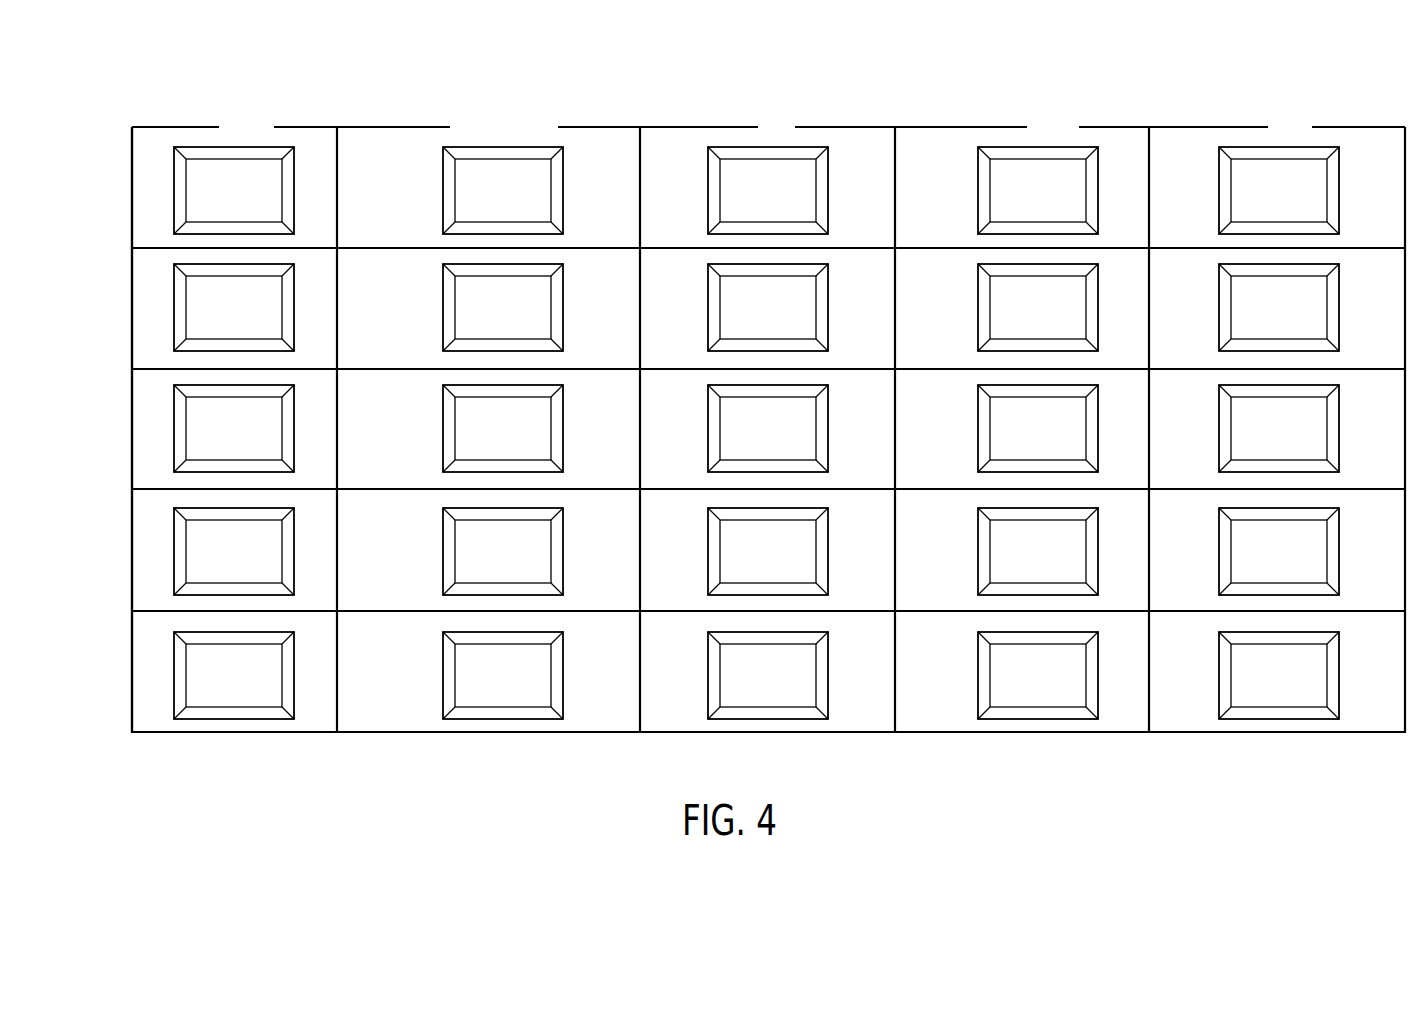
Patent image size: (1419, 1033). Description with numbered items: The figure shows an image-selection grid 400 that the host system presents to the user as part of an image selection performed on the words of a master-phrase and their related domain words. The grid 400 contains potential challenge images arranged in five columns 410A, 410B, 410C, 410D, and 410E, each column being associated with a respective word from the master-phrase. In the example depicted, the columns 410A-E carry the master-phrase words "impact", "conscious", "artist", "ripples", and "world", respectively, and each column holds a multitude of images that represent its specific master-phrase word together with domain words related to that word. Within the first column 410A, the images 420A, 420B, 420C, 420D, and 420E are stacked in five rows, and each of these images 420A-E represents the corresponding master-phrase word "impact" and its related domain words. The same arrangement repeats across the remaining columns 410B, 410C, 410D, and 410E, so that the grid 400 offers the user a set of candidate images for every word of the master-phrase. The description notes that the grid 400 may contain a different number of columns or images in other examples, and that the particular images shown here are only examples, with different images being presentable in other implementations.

The image-selection grid 400 is at (229, 98).
The column 410A is at (255, 120).
The column 410B is at (505, 120).
The column 410C is at (775, 120).
The column 410D is at (1043, 120).
The column 410E is at (1307, 122).
The image 420A is at (130, 191).
The image 420B is at (130, 283).
The image 420C is at (130, 430).
The image 420D is at (130, 554).
The image 420E is at (130, 684).